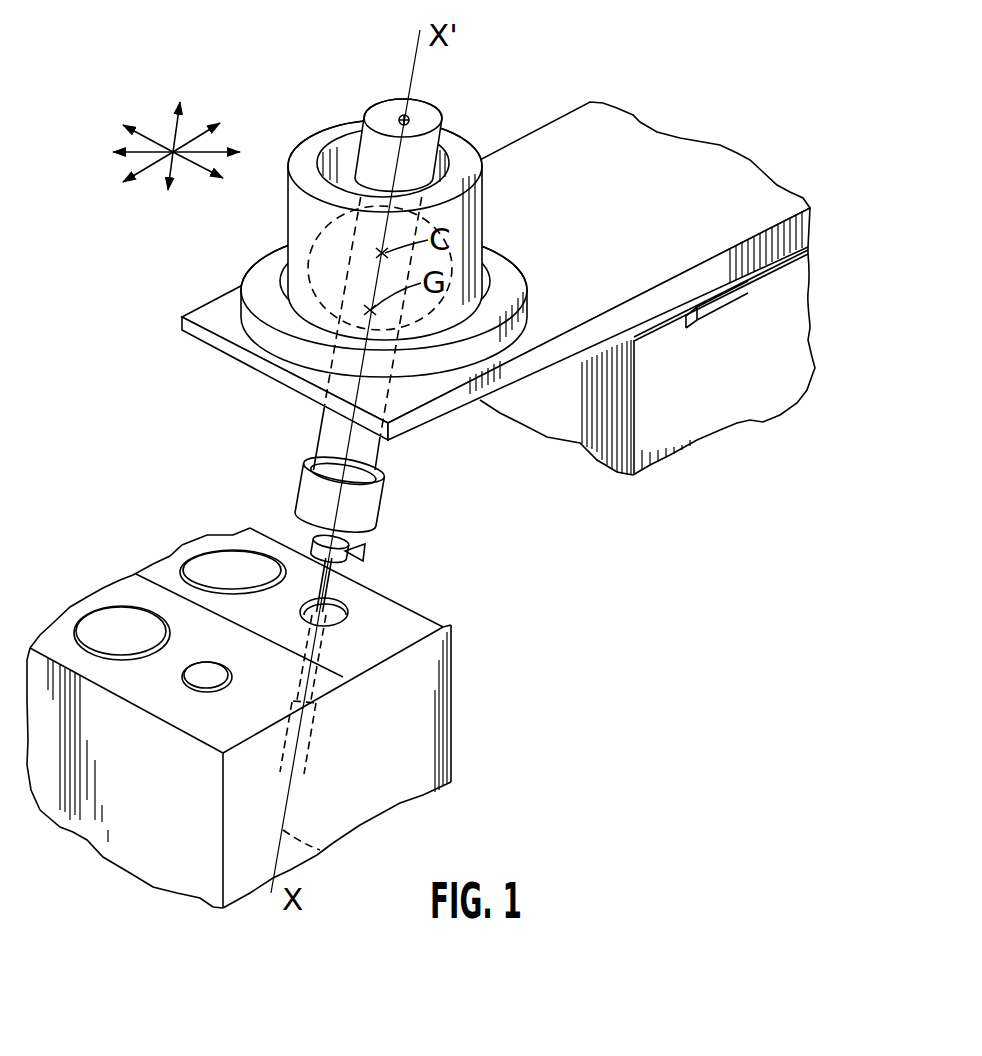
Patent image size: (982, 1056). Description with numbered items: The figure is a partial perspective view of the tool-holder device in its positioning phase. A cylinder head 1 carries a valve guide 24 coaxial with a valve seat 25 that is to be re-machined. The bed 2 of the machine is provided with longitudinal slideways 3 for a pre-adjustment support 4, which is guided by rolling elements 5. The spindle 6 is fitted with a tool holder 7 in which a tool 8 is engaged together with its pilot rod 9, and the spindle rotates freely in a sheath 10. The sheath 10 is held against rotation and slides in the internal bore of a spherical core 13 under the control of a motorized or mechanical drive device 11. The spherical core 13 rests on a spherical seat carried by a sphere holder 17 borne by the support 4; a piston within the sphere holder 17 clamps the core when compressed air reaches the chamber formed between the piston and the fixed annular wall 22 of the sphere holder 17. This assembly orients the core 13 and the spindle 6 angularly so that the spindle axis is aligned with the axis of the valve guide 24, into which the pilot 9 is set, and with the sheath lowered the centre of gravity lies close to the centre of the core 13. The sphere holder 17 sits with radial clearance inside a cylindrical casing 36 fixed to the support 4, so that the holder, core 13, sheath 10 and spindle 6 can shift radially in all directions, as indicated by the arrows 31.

The cylinder head 1 is at (430, 733).
The bed of the machine 2 is at (710, 410).
The longitudinal slideways 3 is at (778, 262).
The pre-adjustment support 4 is at (753, 187).
The rolling elements 5 is at (740, 290).
The spindle 6 is at (349, 543).
The tool holder 7 is at (317, 540).
The tool 8 is at (352, 557).
The pilot rod 9 is at (347, 597).
The sheath 10 is at (367, 460).
The sheath translation drive device 11 is at (283, 830).
The spherical core 13 is at (327, 233).
The sphere holder 17 is at (467, 213).
The fixed annular wall 22 is at (450, 143).
The valve guide 24 is at (315, 757).
The valve seat 25 is at (302, 615).
The arrows 31 is at (160, 175).
The cylindrical casing 36 is at (523, 313).